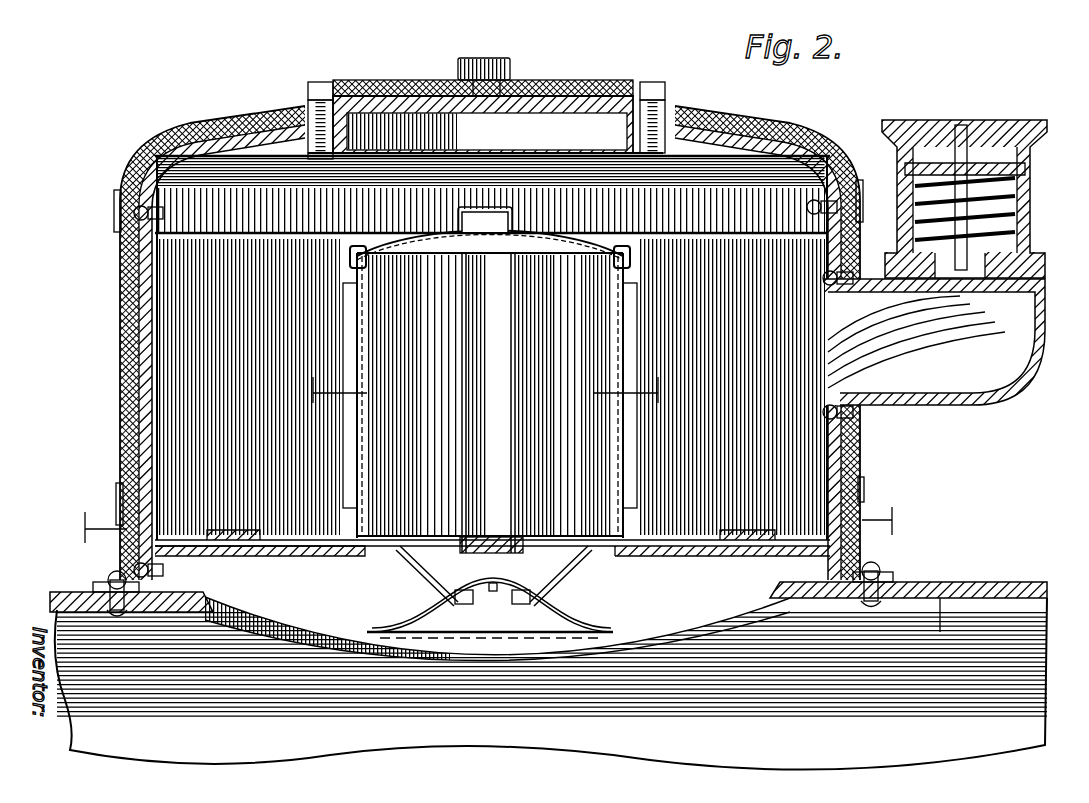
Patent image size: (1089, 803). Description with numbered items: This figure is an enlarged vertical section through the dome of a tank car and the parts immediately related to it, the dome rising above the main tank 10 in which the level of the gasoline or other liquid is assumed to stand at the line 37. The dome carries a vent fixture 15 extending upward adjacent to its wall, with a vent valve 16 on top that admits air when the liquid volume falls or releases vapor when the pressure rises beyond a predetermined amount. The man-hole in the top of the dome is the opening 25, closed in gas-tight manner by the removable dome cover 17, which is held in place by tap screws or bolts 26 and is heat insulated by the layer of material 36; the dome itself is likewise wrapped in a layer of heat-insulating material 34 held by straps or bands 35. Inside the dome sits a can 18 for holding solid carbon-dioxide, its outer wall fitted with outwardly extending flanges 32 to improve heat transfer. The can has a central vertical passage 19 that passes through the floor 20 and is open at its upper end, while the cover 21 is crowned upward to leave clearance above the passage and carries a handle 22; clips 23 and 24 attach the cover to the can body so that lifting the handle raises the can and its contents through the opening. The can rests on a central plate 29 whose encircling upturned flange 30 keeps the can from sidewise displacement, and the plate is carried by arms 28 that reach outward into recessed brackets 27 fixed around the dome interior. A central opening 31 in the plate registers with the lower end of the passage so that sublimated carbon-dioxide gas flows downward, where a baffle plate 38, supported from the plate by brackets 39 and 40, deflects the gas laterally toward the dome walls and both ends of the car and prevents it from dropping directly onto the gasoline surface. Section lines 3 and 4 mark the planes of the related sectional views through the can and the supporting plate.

The section line 3- 3 is at (489, 392).
The section line 4- 4 is at (482, 525).
The main tank 10 is at (68, 592).
The vent fixture 15 is at (944, 379).
The vent valve 16 is at (1046, 236).
The dome cover 17 is at (585, 95).
The can 18 is at (354, 461).
The vertical passage 19 is at (508, 478).
The floor of the can 20 is at (562, 520).
The cover for the can 21 is at (560, 246).
The handle 22 is at (513, 216).
The clip 23 is at (628, 254).
The clip 24 is at (356, 248).
The opening in the top of the dome 25 is at (336, 160).
The tap screws or bolts 26 is at (320, 83).
The brackets 27 is at (128, 563).
The arms 28 is at (686, 540).
The central plate 29 is at (460, 543).
The upturned flange 30 is at (360, 528).
The central opening 31 is at (505, 548).
The outwardly extending flanges 32 is at (345, 436).
The layer of heat-insulating material 34 is at (132, 388).
The straps or bands 35 is at (116, 207).
The layer of material 36 is at (410, 82).
The line 37 is at (950, 592).
The baffle plate 38 is at (440, 628).
The bracket 39 is at (430, 578).
The bracket 40 is at (568, 560).